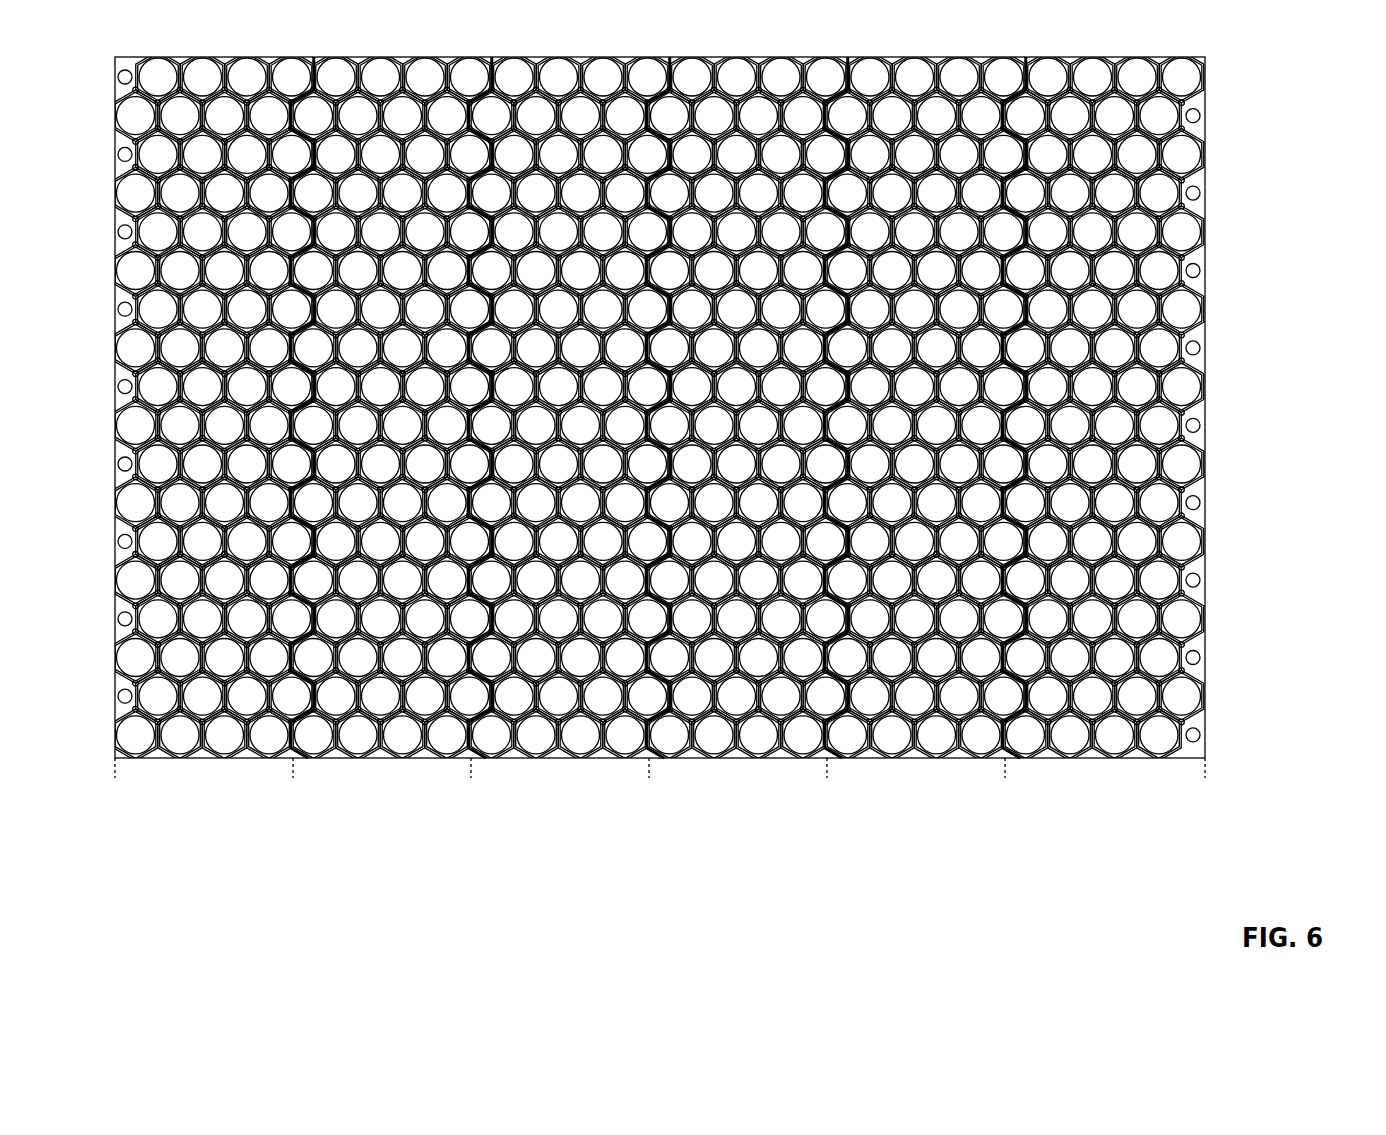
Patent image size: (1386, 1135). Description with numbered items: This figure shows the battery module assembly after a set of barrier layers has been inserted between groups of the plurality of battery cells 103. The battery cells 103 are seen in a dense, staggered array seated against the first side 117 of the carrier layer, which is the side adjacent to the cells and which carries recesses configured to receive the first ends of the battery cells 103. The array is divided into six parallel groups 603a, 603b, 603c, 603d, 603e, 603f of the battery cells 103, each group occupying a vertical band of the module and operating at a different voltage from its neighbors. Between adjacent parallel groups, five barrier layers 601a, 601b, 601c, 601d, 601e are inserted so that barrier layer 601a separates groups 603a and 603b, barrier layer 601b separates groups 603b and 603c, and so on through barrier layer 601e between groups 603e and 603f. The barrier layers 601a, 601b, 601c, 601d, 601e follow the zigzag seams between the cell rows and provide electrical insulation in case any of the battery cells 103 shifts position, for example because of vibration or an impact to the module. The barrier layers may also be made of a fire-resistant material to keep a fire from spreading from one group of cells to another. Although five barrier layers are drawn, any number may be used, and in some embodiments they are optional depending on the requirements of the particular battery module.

The plurality of battery cells 103 is at (1206, 80).
The first side 117 is at (1201, 118).
The barrier layer 601a is at (314, 57).
The barrier layer 601b is at (492, 57).
The barrier layer 601c is at (670, 57).
The barrier layer 601d is at (848, 57).
The barrier layer 601e is at (1026, 57).
The parallel group 603a is at (213, 405).
The parallel group 603b is at (391, 405).
The parallel group 603c is at (569, 405).
The parallel group 603d is at (747, 405).
The parallel group 603e is at (925, 405).
The parallel group 603f is at (1103, 405).